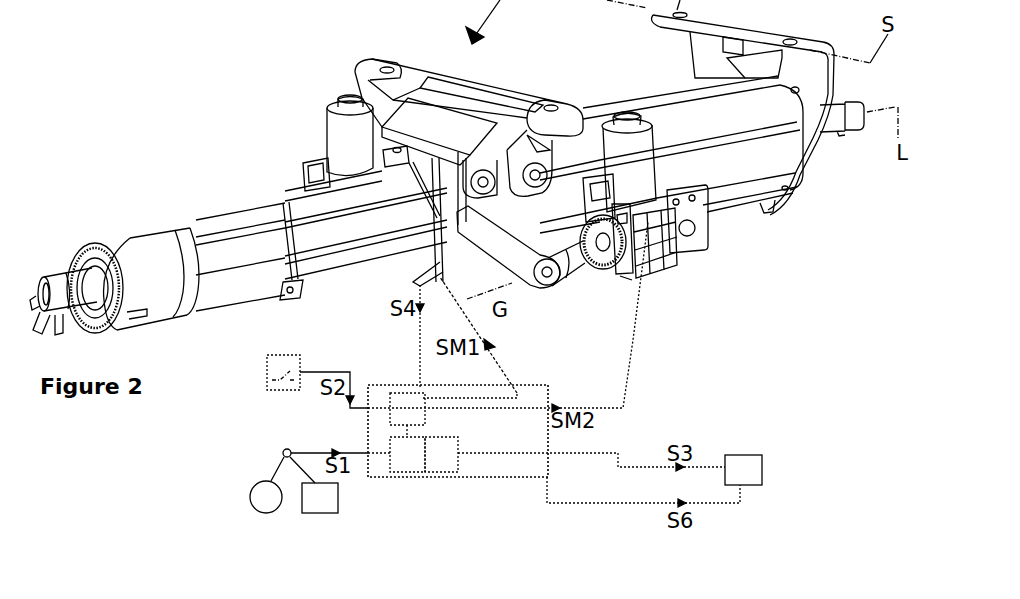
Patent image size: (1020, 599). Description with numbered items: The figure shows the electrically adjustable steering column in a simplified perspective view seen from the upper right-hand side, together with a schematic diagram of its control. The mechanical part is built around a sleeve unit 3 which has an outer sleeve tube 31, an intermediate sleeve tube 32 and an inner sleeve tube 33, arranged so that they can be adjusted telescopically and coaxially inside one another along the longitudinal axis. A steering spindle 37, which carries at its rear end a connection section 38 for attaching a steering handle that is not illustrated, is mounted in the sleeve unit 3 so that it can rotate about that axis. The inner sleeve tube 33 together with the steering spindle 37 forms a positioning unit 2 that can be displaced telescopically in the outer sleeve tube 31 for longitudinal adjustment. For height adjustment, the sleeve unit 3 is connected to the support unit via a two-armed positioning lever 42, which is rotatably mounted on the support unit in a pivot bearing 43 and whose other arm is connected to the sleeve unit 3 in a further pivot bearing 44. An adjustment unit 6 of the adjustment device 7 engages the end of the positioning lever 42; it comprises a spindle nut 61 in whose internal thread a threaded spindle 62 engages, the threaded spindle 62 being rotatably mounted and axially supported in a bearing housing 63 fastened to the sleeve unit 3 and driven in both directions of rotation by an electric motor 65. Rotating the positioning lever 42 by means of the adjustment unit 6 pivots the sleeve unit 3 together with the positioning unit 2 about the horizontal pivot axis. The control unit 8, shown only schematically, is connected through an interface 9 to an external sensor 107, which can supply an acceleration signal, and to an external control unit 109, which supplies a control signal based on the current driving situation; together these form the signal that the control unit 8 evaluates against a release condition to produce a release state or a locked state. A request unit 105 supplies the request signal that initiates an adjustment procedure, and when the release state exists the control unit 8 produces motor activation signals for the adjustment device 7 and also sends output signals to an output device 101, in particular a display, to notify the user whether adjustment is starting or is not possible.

The positioning unit 2 is at (205, 316).
The sleeve unit 3 is at (733, 178).
The adjustment unit 6 is at (631, 291).
The adjustment device 7 is at (320, 112).
The control unit 8 is at (472, 478).
The interface 9 is at (286, 448).
The outer sleeve tube 31 is at (683, 113).
The intermediate sleeve tube 32 is at (371, 248).
The inner sleeve tube 33 is at (234, 276).
The steering spindle 37 is at (96, 280).
The connection section 38 is at (58, 274).
The positioning lever 42 is at (547, 286).
The pivot bearing 43 is at (537, 163).
The further pivot bearing 44 is at (487, 169).
The spindle nut 61 is at (613, 276).
The threaded spindle 62 is at (590, 266).
The bearing housing 63 is at (650, 280).
The electric motor 65 is at (675, 264).
The output device 101 is at (764, 470).
The request unit 105 is at (284, 355).
The external sensor 107 is at (268, 514).
The external control unit 109 is at (321, 514).